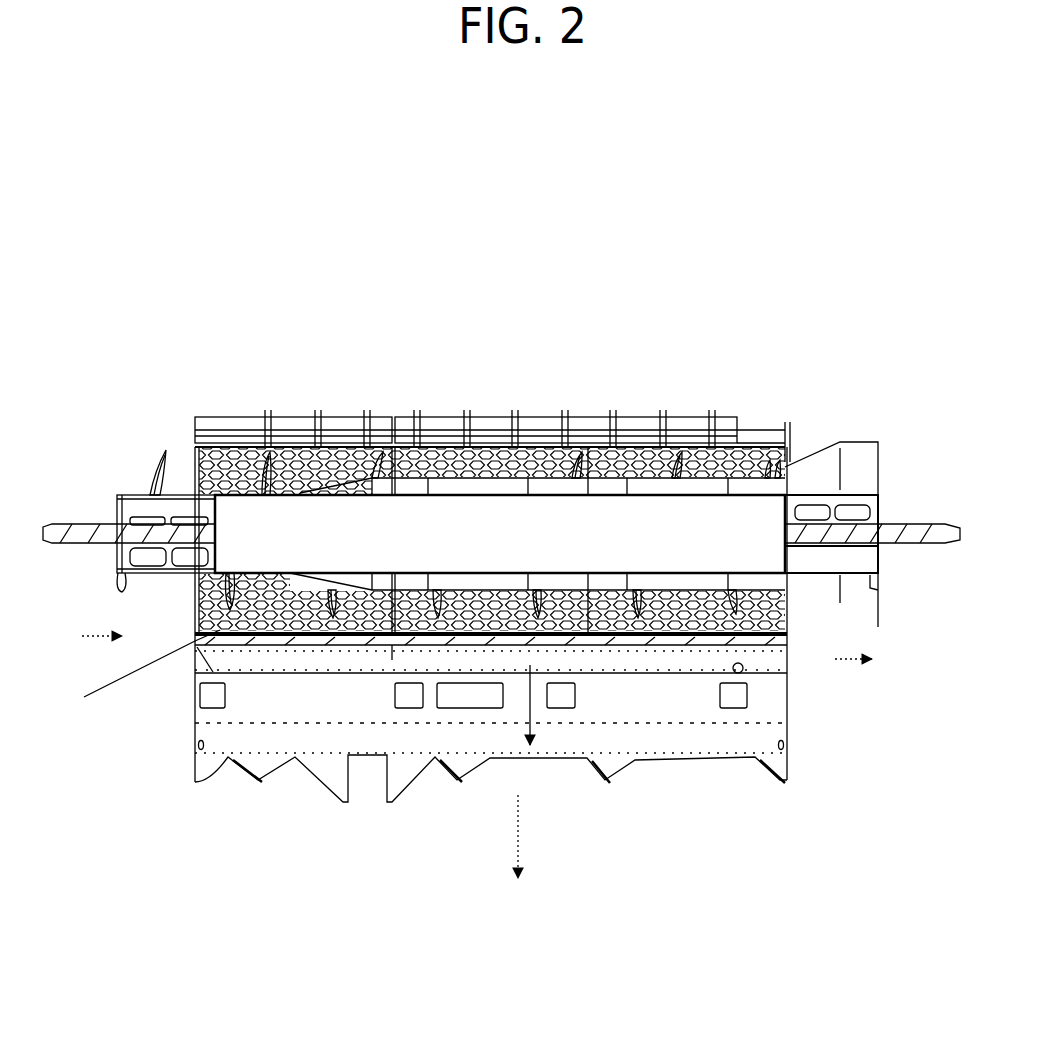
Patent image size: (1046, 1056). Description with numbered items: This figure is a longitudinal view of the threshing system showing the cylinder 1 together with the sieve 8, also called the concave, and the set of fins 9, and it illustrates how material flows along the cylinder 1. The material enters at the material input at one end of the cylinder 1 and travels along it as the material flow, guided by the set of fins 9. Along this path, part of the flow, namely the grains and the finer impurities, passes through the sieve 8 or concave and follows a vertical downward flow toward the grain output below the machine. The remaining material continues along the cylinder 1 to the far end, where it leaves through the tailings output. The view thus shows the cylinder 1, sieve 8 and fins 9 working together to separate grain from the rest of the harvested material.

The cylinder 1 is at (92, 468).
The sieve 8 is at (300, 450).
The set of fins 9 is at (537, 392).